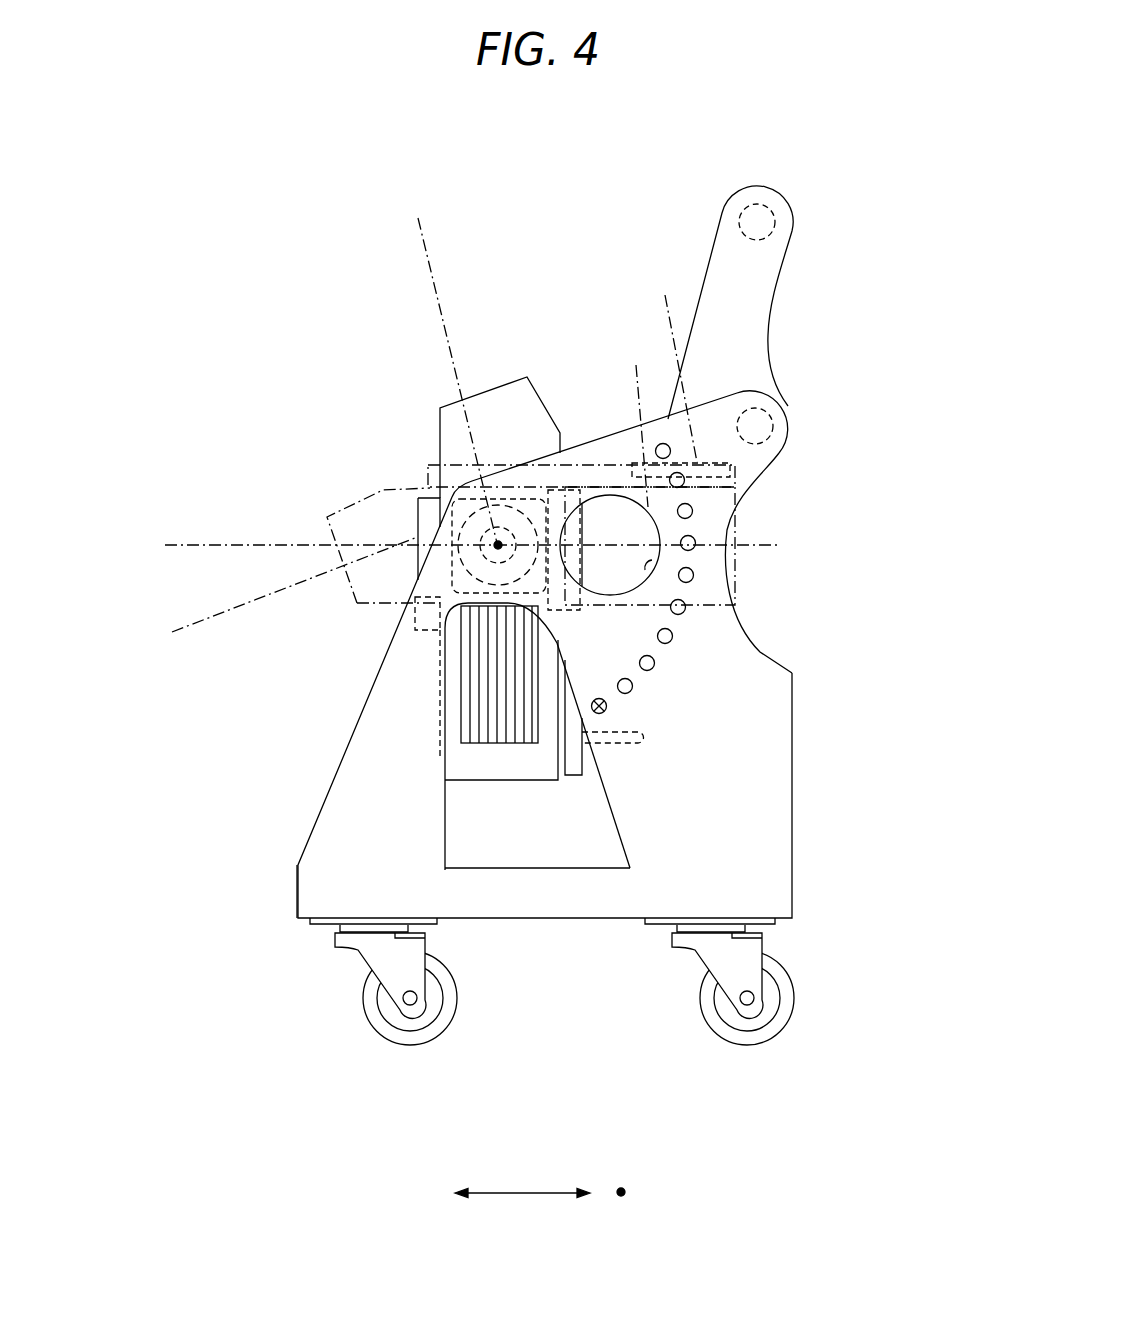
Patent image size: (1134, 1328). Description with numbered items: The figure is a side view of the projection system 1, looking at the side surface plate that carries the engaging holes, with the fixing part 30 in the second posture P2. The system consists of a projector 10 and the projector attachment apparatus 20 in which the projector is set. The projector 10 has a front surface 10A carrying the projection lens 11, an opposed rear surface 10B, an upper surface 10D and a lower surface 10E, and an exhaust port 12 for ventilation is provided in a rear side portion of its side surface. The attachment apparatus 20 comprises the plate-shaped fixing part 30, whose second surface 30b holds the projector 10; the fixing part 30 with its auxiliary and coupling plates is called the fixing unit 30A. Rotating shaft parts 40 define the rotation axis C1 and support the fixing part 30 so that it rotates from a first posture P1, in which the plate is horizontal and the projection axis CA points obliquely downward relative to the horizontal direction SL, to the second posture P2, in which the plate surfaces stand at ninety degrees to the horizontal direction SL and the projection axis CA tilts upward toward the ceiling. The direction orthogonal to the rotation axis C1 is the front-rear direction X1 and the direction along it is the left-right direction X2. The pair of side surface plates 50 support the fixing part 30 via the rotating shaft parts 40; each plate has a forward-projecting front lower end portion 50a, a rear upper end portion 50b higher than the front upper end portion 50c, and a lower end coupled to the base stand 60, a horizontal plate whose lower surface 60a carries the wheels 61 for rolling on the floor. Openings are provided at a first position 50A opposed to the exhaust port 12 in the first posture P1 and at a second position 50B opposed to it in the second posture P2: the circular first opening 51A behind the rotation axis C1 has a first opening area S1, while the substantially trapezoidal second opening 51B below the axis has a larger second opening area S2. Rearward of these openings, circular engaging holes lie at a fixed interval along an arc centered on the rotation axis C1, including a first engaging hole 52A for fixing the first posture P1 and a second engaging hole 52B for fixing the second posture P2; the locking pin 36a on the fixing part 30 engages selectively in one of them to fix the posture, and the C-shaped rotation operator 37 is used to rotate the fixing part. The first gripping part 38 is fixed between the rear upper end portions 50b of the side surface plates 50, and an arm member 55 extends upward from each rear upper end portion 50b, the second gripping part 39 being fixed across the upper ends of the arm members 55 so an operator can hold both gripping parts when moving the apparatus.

The projection system 1 is at (860, 258).
The projector 10 is at (440, 454).
The front surface 10A is at (465, 400).
The rear surface 10B is at (434, 792).
The upper surface 10D is at (438, 655).
The lower surface 10E is at (562, 752).
The projection lens 11 is at (498, 500).
The exhaust port 12 is at (485, 695).
The projector attachment apparatus 20 is at (766, 641).
The fixing part 30 is at (490, 407).
The fixing unit 30A is at (596, 772).
The second surface 30b is at (644, 422).
The locking pin 36a is at (645, 742).
The rotation operator 37 is at (673, 364).
The first gripping part 38 is at (775, 426).
The second gripping part 39 is at (757, 205).
The rotating shaft parts 40 is at (517, 503).
The side surface plates 50 is at (755, 779).
The first position 50A is at (674, 528).
The second position 50B is at (482, 780).
The front lower end portion 50a is at (345, 880).
The rear upper end portion 50b is at (765, 398).
The front upper end portion 50c is at (475, 495).
The first opening 51A is at (652, 560).
The second opening 51B is at (448, 832).
The first engaging hole 52A is at (670, 450).
The second engaging hole 52B is at (606, 700).
The arm member 55 is at (713, 247).
The base stand 60 is at (551, 907).
The lower surface 60a is at (626, 907).
The wheels 61 is at (410, 1047).
The rotation axis C1 is at (498, 545).
The projection axis CA is at (427, 236).
The horizontal direction SL is at (200, 545).
The first posture P1 is at (342, 494).
The second posture P2 is at (562, 407).
The first opening area S1 is at (611, 526).
The second opening area S2 is at (536, 825).
The front-rear direction X1 is at (522, 1210).
The left-right direction X2 is at (621, 1192).